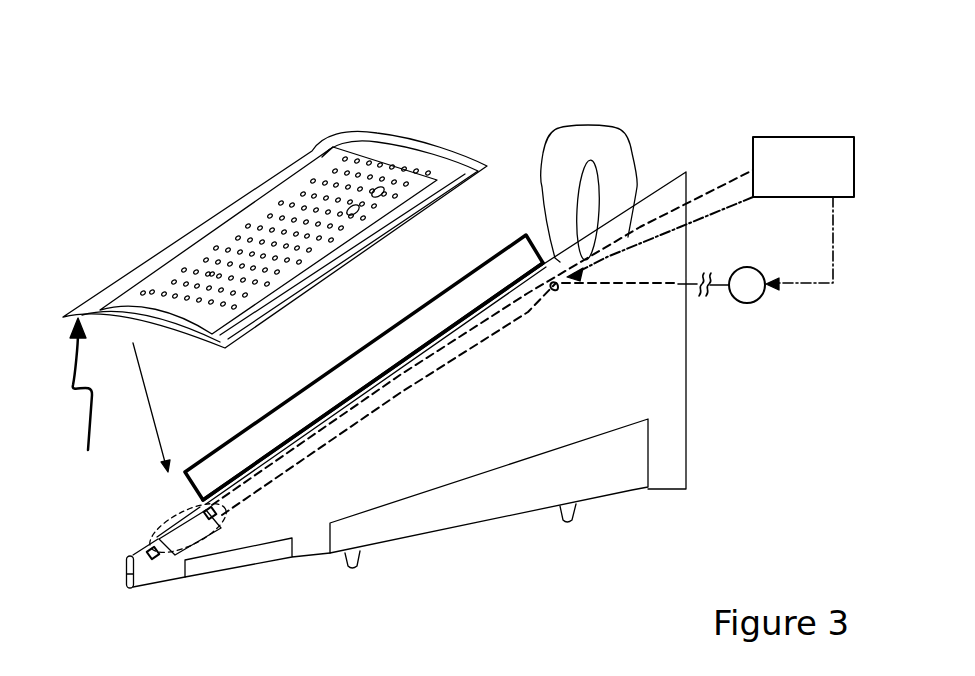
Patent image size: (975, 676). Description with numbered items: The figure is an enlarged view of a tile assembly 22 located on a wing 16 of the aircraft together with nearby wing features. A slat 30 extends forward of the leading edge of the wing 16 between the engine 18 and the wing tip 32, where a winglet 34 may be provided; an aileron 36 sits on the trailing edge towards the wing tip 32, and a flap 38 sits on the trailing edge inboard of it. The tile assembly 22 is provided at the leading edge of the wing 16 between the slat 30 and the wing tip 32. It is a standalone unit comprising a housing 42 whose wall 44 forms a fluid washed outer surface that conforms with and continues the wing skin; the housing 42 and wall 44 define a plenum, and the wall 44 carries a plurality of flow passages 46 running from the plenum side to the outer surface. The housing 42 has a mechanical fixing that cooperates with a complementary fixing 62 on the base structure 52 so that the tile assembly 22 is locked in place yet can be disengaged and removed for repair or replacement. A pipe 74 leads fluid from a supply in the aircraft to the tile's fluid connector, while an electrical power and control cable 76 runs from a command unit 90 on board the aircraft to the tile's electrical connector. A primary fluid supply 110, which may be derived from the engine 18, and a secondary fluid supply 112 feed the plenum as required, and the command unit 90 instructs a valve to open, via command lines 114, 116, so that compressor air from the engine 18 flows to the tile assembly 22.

The wing 16 is at (662, 343).
The engine 18 is at (592, 138).
The tile assembly 22 is at (176, 536).
The slat 30 is at (355, 327).
The wing tip 32 is at (125, 568).
The winglet 34 is at (126, 573).
The aileron 36 is at (265, 565).
The flap 38 is at (435, 522).
The housing 42 is at (220, 224).
The wall 44 is at (290, 149).
The flow passages 46 is at (212, 272).
The base structure 52 is at (167, 576).
The complementary fixing 62 is at (205, 508).
The pipe 74 is at (258, 493).
The electrical power and control cable 76 is at (267, 463).
The command unit 90 is at (793, 137).
The primary fluid supply 110 is at (560, 296).
The secondary fluid supply 112 is at (750, 267).
The command line 114 is at (718, 212).
The command line 116 is at (833, 283).